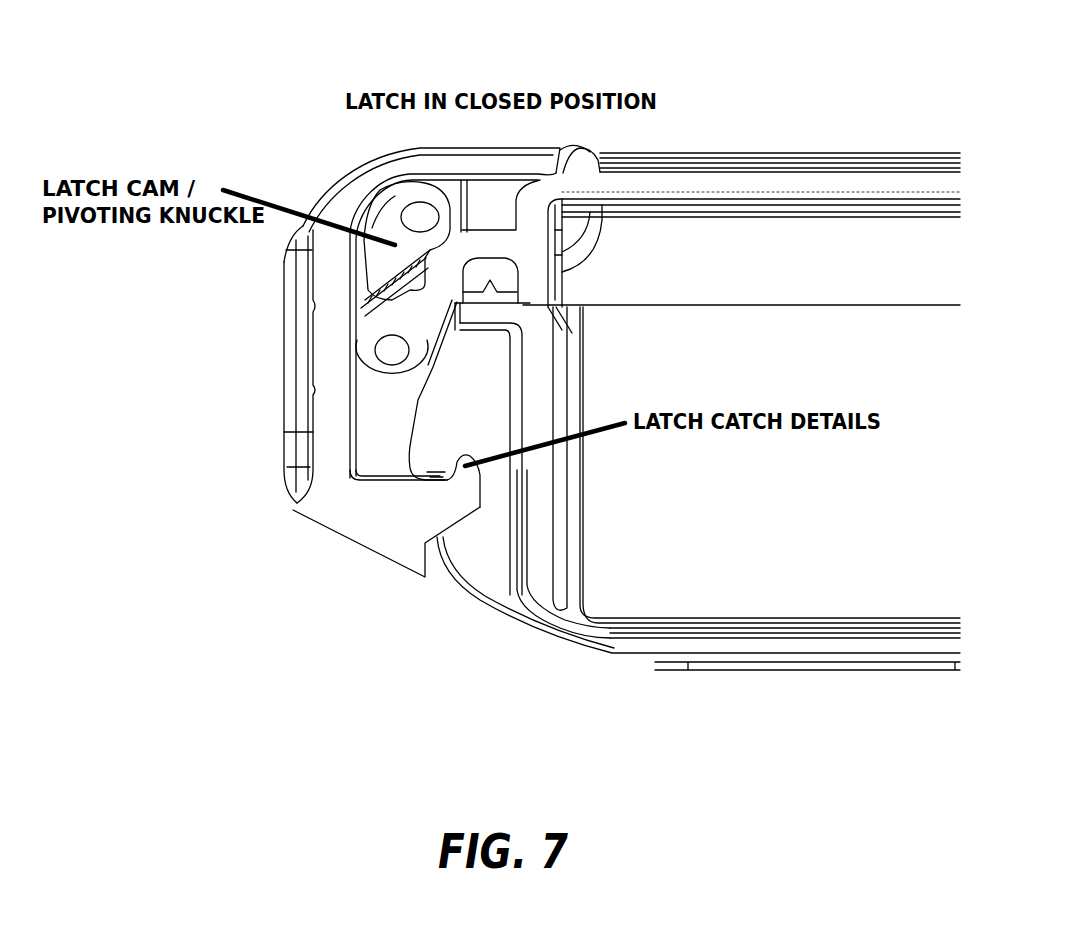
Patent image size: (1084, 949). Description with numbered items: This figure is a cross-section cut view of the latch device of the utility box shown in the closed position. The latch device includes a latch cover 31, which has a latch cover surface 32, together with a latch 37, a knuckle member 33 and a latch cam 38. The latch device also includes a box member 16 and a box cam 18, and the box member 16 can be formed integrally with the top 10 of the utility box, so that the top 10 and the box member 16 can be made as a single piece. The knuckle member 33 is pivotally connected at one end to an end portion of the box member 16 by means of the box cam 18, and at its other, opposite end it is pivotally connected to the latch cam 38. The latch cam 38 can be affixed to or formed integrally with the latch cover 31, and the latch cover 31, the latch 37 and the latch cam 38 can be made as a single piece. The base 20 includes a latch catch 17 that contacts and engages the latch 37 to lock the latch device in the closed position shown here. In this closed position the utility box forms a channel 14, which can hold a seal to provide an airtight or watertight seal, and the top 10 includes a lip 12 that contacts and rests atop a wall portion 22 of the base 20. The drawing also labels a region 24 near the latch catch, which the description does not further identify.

The top 10 is at (690, 184).
The lip 12 is at (527, 283).
The channel 14 is at (487, 278).
The box member 16 is at (418, 337).
The latch catch 17 is at (477, 462).
The box cam 18 is at (388, 350).
The base 20 is at (665, 648).
The wall portion 22 is at (540, 325).
The catch block 24 is at (490, 317).
The latch cover 31 is at (413, 173).
The latch cover surface 32 is at (310, 375).
The knuckle member 33 is at (223, 190).
The latch 37 is at (462, 500).
The latch cam 38 is at (417, 218).